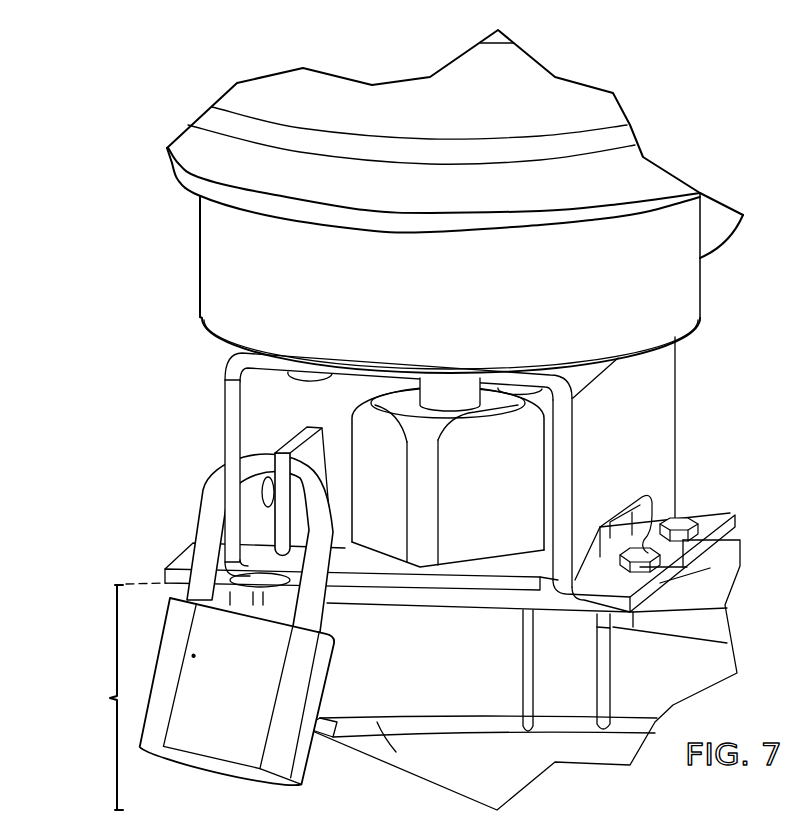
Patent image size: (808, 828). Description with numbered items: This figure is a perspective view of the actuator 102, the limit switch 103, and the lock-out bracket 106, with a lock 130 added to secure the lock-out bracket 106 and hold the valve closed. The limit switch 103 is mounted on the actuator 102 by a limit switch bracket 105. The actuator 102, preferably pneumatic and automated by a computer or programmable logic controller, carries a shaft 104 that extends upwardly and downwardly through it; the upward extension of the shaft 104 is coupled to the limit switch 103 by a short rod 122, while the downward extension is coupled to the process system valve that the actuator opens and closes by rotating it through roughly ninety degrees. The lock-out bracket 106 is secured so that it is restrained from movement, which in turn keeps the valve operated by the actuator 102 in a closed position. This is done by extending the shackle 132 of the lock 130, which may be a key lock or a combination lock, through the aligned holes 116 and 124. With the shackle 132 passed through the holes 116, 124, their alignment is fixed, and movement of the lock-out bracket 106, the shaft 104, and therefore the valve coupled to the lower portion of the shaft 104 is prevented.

The actuator 102 is at (405, 675).
The limit switch 103 is at (200, 254).
The shaft 104 is at (530, 458).
The limit switch bracket 105 is at (224, 425).
The lock-out bracket 106 is at (410, 592).
The hole 116 is at (311, 486).
The short rod 122 is at (403, 380).
The hole 124 is at (262, 483).
The lock 130 is at (327, 677).
The shackle 132 is at (326, 612).